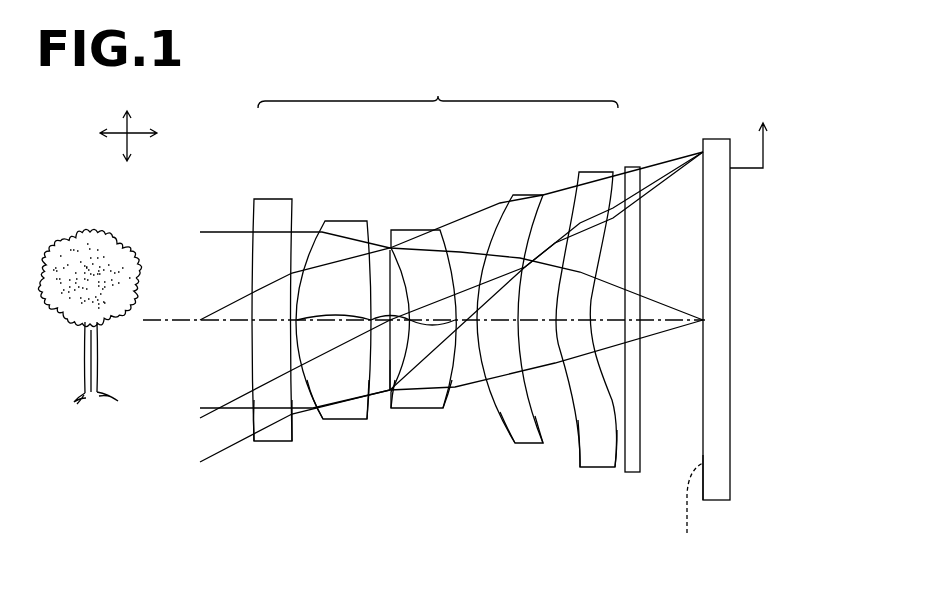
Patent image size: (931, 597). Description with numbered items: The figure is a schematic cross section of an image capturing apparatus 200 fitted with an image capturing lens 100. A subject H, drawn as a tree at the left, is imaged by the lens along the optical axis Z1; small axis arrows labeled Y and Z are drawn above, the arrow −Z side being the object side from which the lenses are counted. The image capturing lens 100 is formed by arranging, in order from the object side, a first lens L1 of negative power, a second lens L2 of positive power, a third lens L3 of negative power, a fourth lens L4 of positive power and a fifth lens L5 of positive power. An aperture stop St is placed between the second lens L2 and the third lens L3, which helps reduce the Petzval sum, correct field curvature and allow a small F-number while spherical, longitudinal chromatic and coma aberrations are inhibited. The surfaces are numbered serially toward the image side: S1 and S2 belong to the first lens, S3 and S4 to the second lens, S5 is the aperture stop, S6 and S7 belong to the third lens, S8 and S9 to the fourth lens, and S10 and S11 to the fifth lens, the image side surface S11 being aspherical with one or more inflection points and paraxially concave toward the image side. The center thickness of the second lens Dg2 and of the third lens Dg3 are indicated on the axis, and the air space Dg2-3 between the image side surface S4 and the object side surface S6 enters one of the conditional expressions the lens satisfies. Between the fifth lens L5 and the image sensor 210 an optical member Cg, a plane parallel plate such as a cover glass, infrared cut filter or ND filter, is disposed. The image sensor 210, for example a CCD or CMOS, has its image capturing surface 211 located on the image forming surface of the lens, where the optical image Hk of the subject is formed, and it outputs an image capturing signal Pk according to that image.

The image capturing lens 100 is at (438, 92).
The image capturing apparatus 200 is at (728, 42).
The image sensor 210 is at (722, 138).
The image capturing surface 211 is at (703, 472).
The first lens L1 is at (272, 200).
The second lens L2 is at (347, 221).
The third lens L3 is at (427, 230).
The fourth lens L4 is at (525, 196).
The fifth lens L5 is at (590, 172).
The aperture stop St is at (390, 262).
The optical member Cg is at (632, 167).
The image capturing signal Pk is at (750, 173).
The optical image Hk is at (689, 511).
The subject H is at (97, 233).
The optical axis Z1 is at (171, 318).
The Y axis Y is at (127, 127).
The Z direction Z is at (126, 136).
The center thickness of second lens Dg2 is at (334, 305).
The center thickness of third lens Dg3 is at (432, 336).
The distance between second lens and third lens Dg2-3 is at (385, 312).
The first surface S1 is at (254, 420).
The second surface S2 is at (288, 418).
The third surface S3 is at (318, 406).
The image side surface of second lens S4 is at (370, 410).
The fifth surface S5 is at (392, 372).
The object side surface of third lens S6 is at (398, 378).
The seventh surface S7 is at (450, 378).
The eighth surface S8 is at (500, 412).
The ninth surface S9 is at (535, 416).
The tenth surface S10 is at (580, 442).
The image side surface of fifth lens S11 is at (616, 452).